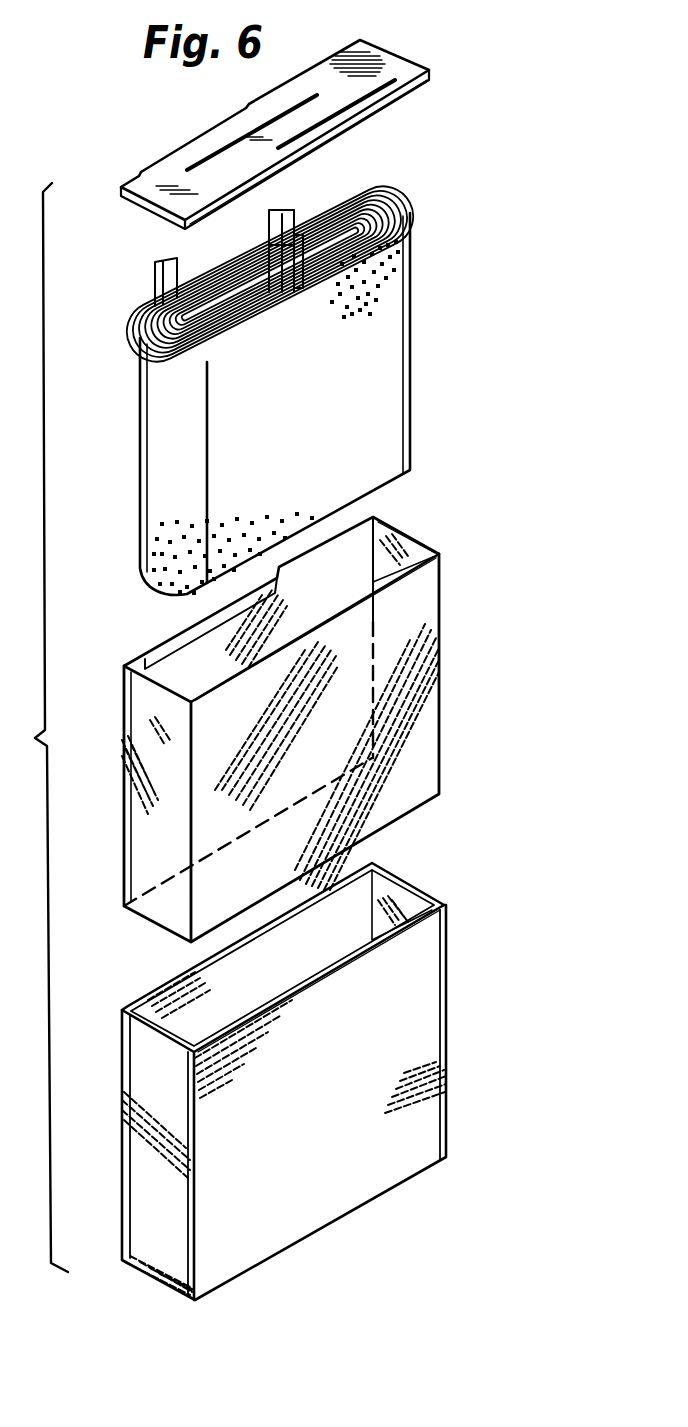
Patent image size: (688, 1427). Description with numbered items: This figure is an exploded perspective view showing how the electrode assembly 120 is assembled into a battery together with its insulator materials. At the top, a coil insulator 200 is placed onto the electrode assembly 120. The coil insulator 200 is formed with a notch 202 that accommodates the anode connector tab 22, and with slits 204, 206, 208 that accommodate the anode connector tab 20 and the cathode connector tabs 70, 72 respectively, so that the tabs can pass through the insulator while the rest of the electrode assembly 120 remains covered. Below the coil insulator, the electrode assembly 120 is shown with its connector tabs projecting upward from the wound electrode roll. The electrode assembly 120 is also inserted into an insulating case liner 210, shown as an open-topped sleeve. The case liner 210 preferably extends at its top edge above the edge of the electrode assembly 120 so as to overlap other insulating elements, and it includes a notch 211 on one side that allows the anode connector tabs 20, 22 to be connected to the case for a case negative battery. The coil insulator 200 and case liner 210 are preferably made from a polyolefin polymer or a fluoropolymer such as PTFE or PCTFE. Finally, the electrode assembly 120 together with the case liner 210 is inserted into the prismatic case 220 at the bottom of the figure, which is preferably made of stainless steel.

The coil insulator 200 is at (436, 73).
The notch 202 is at (216, 106).
The slit 204 is at (297, 106).
The slit 206 is at (368, 54).
The slit 208 is at (352, 120).
The electrode assembly 120 is at (428, 314).
The cathode connector tab 70 is at (343, 200).
The anode connector tab 20 is at (290, 212).
The anode connector tab 22 is at (173, 257).
The cathode connector tab 72 is at (272, 246).
The case liner 210 is at (462, 640).
The notch 211 is at (183, 645).
The prismatic case 220 is at (474, 970).